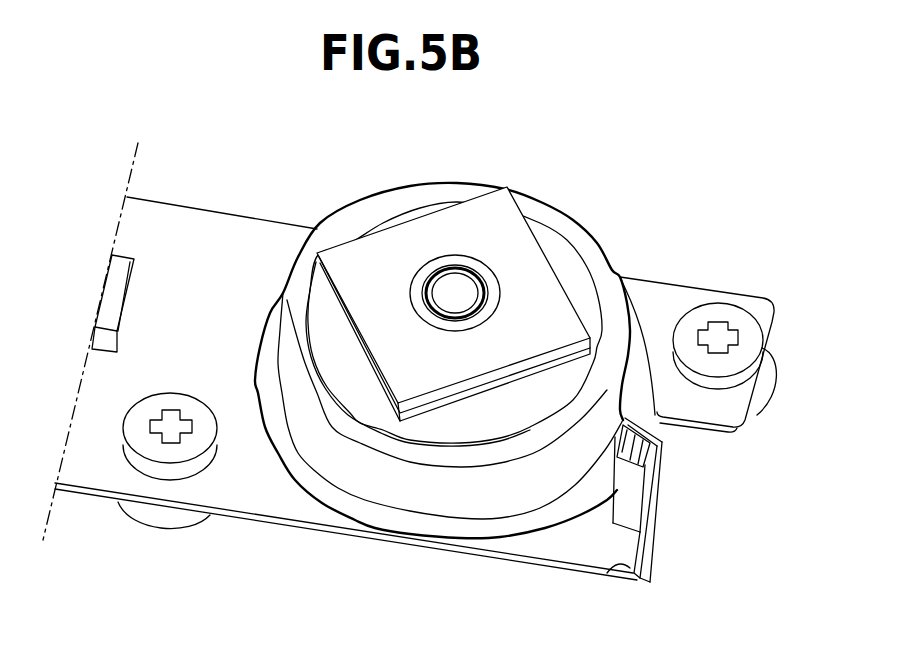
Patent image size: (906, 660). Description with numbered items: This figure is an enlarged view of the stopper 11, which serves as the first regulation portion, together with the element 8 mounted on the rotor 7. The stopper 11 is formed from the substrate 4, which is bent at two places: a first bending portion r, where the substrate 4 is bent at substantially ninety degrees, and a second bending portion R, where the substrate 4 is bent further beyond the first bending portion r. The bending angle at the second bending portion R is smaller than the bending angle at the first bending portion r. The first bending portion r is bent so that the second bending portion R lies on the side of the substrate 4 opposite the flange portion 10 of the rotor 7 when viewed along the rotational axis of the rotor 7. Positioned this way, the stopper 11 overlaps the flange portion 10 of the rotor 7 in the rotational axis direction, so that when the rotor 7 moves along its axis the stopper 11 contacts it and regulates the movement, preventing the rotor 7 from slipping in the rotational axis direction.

The substrate 4 is at (222, 240).
The rotor 7 is at (340, 462).
The lens unit 8 is at (455, 278).
The flange portion 10 is at (402, 523).
The stopper 11 is at (660, 415).
The second bending portion R is at (668, 433).
The first bending portion r is at (607, 573).